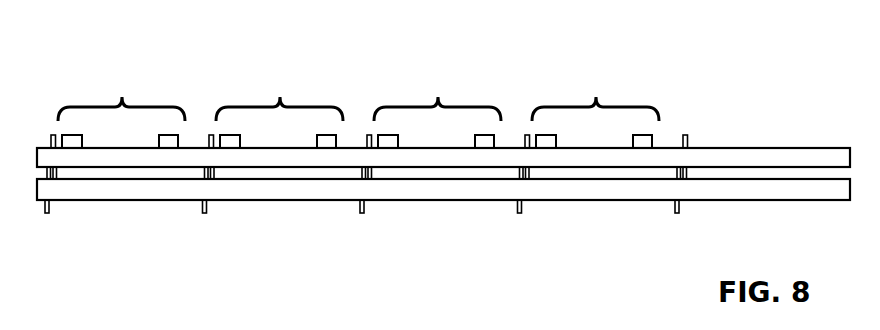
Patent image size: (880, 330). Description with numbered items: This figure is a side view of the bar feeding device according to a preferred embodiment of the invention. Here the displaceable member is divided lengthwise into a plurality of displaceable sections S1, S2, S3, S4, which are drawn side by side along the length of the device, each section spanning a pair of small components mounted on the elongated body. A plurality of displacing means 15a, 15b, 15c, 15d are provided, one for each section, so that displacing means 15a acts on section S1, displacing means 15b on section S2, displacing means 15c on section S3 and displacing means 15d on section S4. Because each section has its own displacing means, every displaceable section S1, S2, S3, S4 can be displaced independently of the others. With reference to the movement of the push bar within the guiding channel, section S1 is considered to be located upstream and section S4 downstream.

The displacing means 15a is at (170, 135).
The displacing means 15b is at (328, 135).
The displacing means 15c is at (486, 135).
The displacing means 15d is at (644, 135).
The displaceable section S1 is at (122, 97).
The displaceable section S2 is at (280, 97).
The displaceable section S3 is at (438, 97).
The displaceable section S4 is at (596, 97).